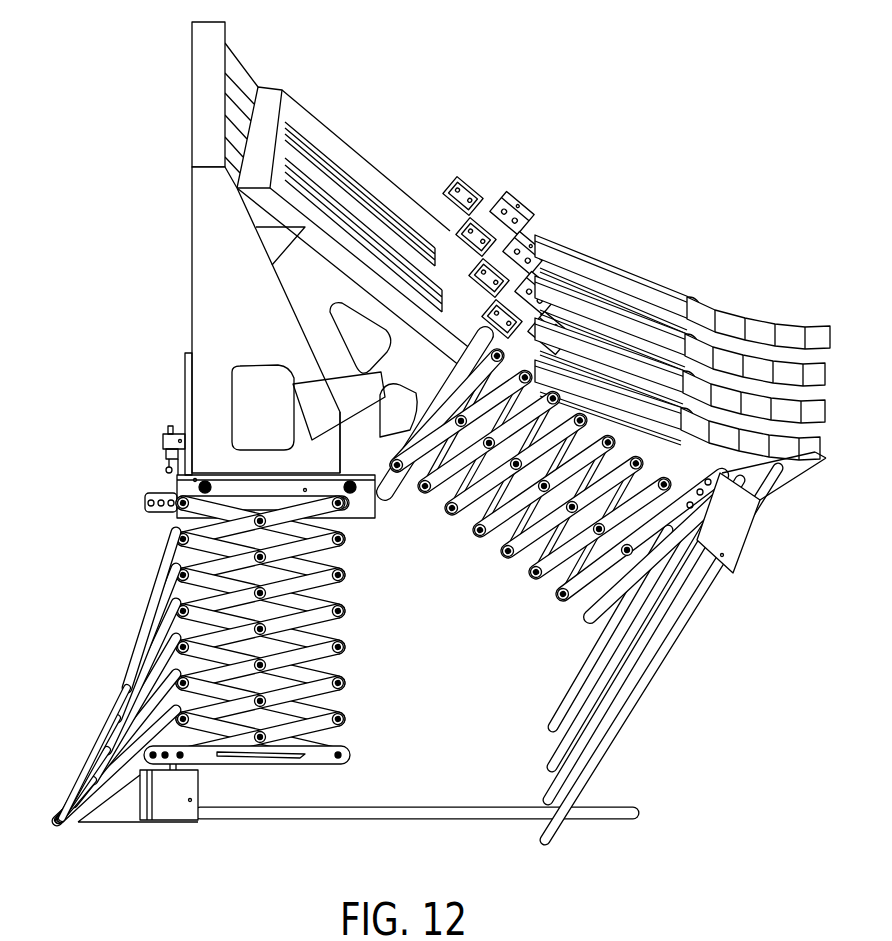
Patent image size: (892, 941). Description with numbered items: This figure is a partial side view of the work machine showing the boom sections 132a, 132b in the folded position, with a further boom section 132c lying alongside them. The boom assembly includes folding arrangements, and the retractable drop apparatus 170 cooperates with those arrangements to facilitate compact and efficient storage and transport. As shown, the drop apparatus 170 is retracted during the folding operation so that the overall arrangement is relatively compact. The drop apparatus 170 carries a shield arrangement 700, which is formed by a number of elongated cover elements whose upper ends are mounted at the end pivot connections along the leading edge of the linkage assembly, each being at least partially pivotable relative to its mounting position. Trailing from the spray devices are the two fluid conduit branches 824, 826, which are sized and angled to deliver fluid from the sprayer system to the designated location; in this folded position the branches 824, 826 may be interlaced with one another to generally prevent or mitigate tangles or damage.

The boom section 132a is at (215, 303).
The boom section 132b is at (320, 138).
The lower rail of frame 132c is at (312, 273).
The drop apparatus 170 is at (140, 529).
The shield arrangement 700 is at (133, 658).
The branch 824 is at (665, 654).
The branch 826 is at (646, 762).